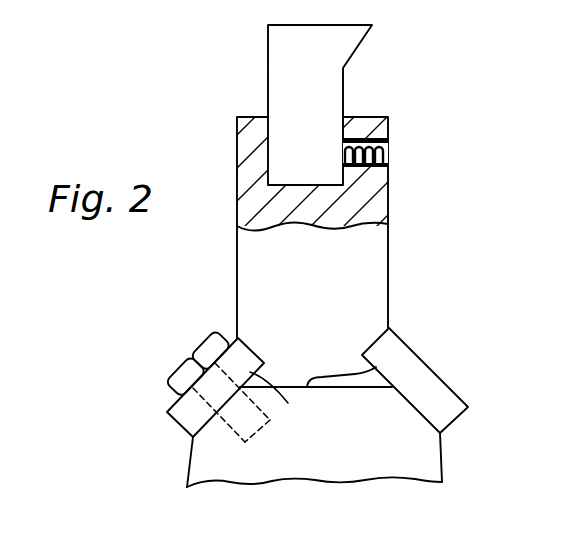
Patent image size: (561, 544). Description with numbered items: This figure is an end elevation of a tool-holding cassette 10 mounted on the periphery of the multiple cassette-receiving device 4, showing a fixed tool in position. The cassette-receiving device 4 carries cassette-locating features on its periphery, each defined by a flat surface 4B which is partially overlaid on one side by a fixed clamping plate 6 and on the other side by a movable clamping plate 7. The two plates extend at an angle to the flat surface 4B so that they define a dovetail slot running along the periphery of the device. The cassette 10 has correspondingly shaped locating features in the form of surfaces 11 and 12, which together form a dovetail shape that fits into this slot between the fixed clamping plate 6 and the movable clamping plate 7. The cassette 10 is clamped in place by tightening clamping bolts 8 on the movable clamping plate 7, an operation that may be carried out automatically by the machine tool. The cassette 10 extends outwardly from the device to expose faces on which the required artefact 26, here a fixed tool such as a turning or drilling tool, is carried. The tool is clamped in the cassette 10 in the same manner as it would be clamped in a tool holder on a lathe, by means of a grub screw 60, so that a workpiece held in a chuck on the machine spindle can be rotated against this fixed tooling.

The artefact 26 is at (278, 63).
The grub screw 60 is at (388, 152).
The cassette 10 is at (390, 256).
The surface 11 is at (378, 333).
The surface 12 is at (308, 387).
The clamping bolt 8 is at (183, 358).
The movable clamping plate 7 is at (182, 422).
The fixed clamping plate 6 is at (417, 367).
The flat surface 4B is at (343, 387).
The cassette-receiving device 4 is at (423, 463).